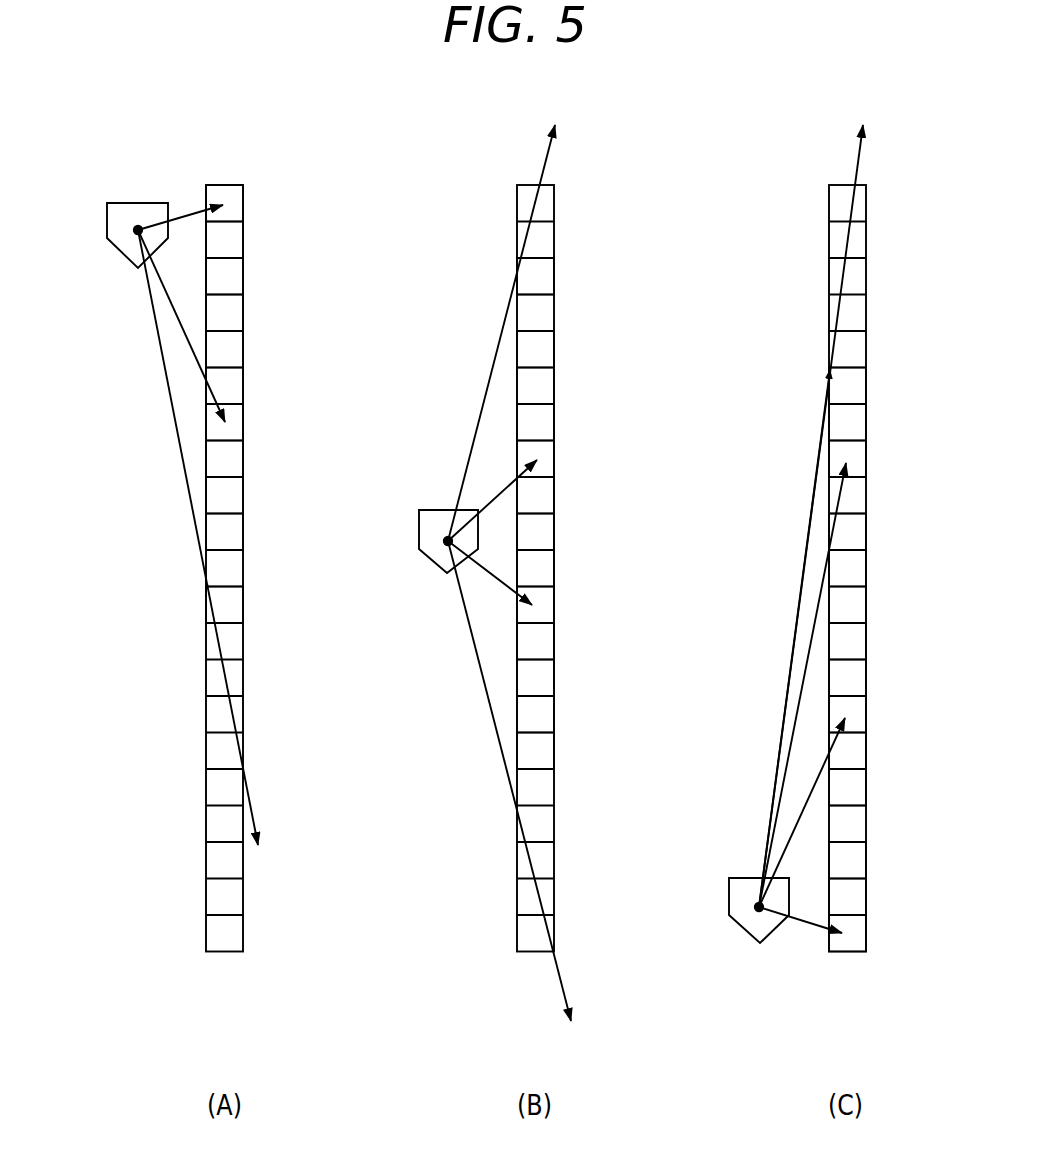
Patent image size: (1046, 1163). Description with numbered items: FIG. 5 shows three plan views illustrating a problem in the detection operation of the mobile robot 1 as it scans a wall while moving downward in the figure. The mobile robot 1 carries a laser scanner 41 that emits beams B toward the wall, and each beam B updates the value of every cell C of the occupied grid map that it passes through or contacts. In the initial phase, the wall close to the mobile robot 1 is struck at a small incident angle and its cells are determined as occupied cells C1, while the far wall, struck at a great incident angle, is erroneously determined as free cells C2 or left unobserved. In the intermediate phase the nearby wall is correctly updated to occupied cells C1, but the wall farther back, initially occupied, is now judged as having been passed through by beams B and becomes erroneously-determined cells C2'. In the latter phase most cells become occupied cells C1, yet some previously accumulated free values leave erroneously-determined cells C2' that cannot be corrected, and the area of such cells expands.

The mobile robot 1 is at (120, 203).
The laser scanner 41 is at (136, 233).
The beam B is at (174, 418).
The cell C is at (236, 862).
The occupied cell C1 is at (236, 240).
The free cell C2 is at (257, 679).
The erroneously-determined cell C2' is at (728, 513).